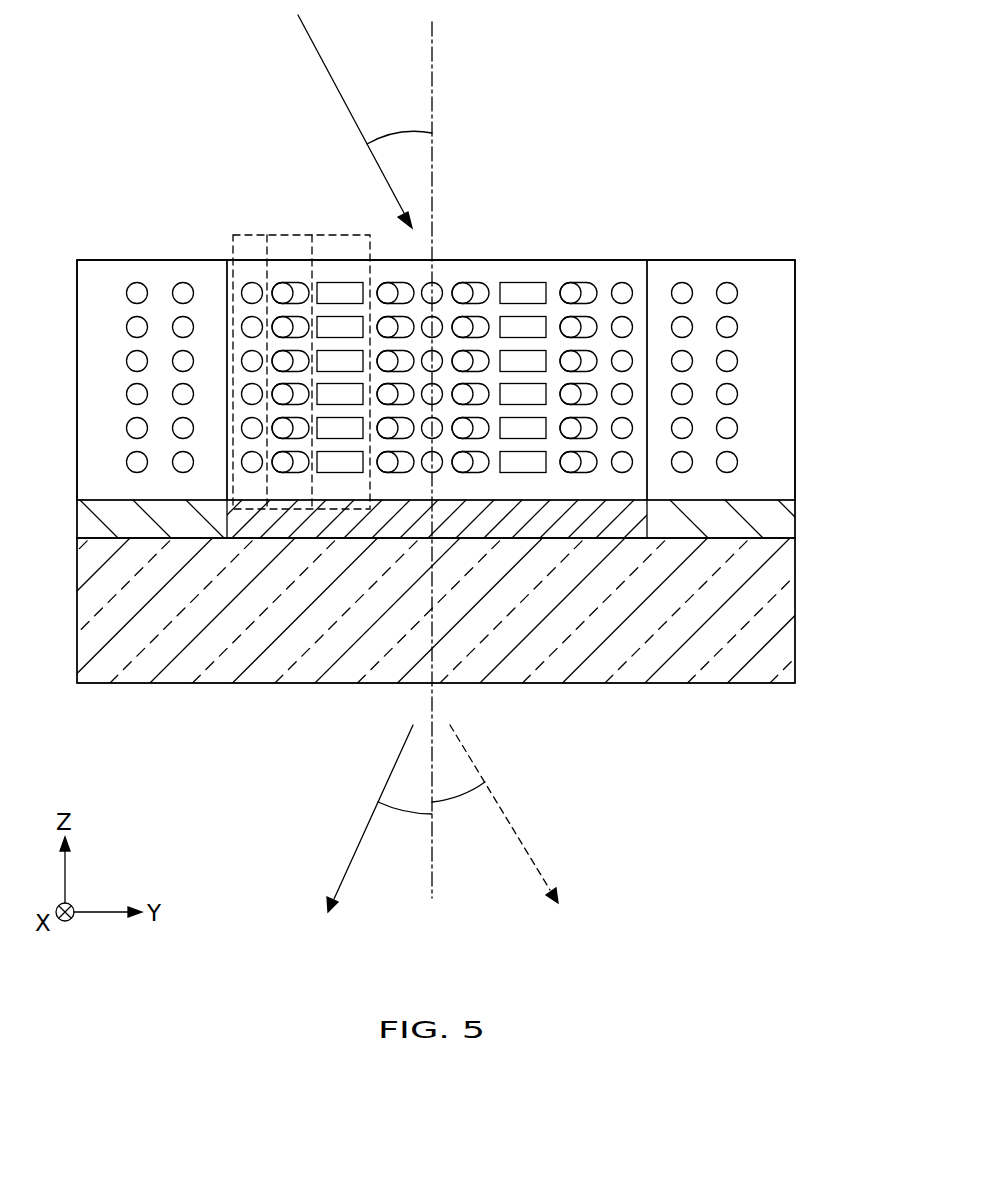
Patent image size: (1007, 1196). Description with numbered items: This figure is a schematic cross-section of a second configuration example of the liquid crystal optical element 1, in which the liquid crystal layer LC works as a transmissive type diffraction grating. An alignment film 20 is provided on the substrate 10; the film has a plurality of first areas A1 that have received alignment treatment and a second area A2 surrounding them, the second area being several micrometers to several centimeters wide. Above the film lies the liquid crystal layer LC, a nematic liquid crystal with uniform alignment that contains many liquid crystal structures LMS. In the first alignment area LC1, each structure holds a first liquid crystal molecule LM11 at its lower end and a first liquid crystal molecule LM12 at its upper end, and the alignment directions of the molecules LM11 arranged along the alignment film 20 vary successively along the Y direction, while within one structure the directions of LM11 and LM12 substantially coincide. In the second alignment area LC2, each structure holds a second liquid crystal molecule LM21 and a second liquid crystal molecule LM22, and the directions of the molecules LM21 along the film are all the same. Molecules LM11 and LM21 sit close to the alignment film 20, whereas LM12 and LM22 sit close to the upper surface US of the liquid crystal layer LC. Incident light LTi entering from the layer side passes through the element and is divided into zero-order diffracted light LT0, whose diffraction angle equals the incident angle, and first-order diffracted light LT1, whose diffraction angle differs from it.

The liquid crystal optical element 1 is at (117, 718).
The substrate 10 is at (795, 635).
The alignment film 20 is at (795, 525).
The liquid crystal layer LC is at (795, 418).
The first alignment area LC1 is at (605, 270).
The second alignment area LC2 is at (95, 268).
The liquid crystal structure LMS is at (307, 233).
The first liquid crystal molecule LM11 is at (252, 473).
The first liquid crystal molecule LM12 is at (297, 282).
The second liquid crystal molecule LM21 is at (137, 473).
The second liquid crystal molecule LM22 is at (183, 282).
The upper surface US is at (486, 258).
The first area A1 is at (560, 525).
The second area A2 is at (777, 540).
The incident light LTi is at (339, 121).
The zero-order diffracted light LT0 is at (523, 814).
The first-order diffracted light LT1 is at (348, 818).